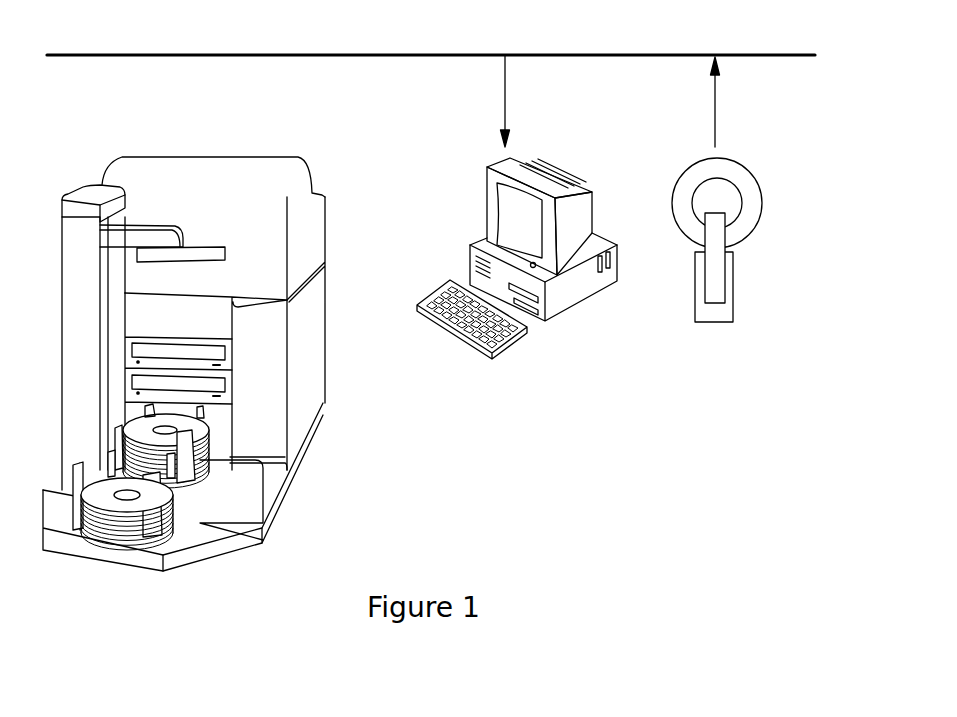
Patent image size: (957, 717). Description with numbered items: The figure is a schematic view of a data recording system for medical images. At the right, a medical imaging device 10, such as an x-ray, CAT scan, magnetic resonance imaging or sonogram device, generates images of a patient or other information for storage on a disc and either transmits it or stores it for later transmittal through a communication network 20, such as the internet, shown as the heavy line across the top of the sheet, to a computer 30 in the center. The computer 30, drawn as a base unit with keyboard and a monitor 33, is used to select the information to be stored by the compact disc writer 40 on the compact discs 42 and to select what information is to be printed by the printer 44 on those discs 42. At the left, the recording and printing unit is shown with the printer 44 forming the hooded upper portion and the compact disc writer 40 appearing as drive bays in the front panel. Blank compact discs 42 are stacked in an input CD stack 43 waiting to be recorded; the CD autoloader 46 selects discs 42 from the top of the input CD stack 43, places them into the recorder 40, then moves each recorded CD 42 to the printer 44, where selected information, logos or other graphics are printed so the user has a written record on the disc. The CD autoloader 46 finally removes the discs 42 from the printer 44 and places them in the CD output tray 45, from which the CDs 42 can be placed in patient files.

The communication network 20 is at (160, 54).
The medical imaging device 10 is at (731, 163).
The monitor 33 is at (535, 166).
The computer 30 is at (478, 240).
The printer 44 is at (305, 228).
The CD autoloader 46 is at (184, 378).
The compact disc writer 40 is at (180, 352).
The compact discs 42 is at (193, 427).
The input CD stack 43 is at (195, 478).
The CD output tray 45 is at (153, 502).